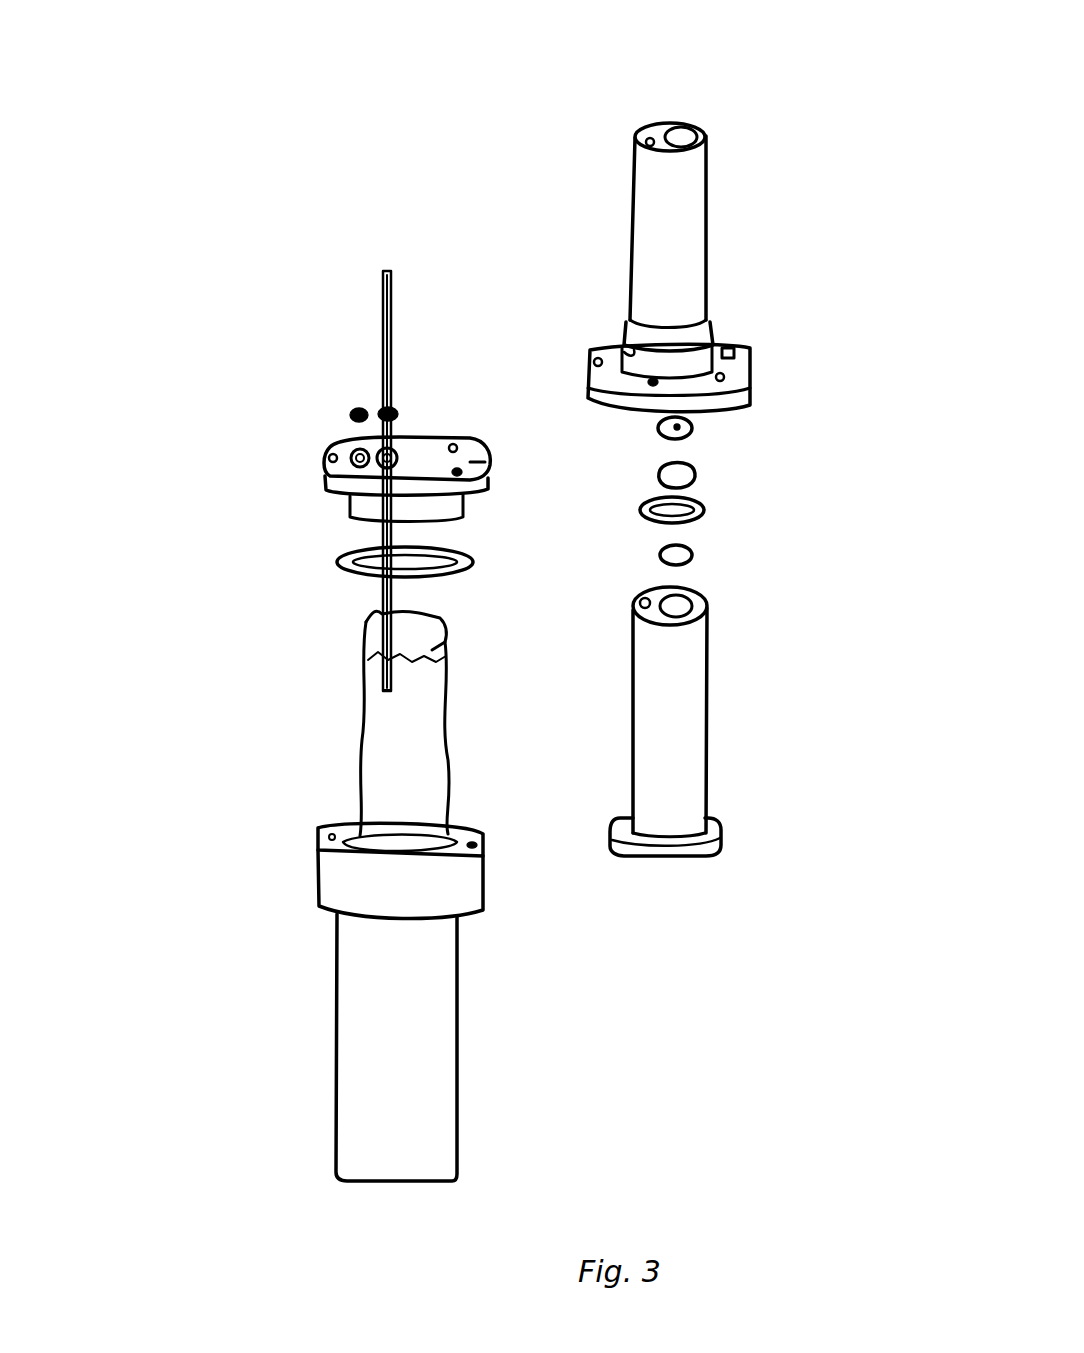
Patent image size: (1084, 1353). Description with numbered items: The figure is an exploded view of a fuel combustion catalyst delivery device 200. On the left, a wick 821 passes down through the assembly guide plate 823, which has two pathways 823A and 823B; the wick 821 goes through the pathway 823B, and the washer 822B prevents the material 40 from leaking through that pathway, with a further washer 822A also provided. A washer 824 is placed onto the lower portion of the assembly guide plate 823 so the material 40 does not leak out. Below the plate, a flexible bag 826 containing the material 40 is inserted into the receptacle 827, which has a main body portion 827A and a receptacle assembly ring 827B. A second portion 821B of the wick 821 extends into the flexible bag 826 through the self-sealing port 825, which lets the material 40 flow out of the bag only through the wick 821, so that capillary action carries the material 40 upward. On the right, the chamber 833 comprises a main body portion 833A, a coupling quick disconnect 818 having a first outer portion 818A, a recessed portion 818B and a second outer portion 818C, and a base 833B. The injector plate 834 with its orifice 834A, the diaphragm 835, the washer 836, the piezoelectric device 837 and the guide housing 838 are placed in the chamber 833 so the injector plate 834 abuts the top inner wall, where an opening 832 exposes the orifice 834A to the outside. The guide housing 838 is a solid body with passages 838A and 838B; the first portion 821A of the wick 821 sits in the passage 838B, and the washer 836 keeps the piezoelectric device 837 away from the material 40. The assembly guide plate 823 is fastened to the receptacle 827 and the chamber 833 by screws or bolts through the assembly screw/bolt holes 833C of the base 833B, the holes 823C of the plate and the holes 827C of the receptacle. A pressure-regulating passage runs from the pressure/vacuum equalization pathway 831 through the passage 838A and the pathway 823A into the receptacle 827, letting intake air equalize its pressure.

The fuel combustion catalyst delivery device 200 is at (720, 1062).
The material 40 is at (393, 737).
The coupling quick disconnect 818 is at (627, 318).
The first outer portion 818A is at (748, 297).
The recessed portion 818B is at (762, 327).
The second outer portion 818C is at (632, 356).
The wick 821 is at (383, 310).
The first portion of the wick 821A is at (408, 320).
The second portion of the wick 821B is at (348, 533).
The washer 822A is at (334, 400).
The washer 822B is at (376, 392).
The assembly guide plate 823 is at (330, 465).
The pathway 823A is at (346, 445).
The pathway 823B is at (400, 442).
The assembly screw/bolt holes 823C is at (476, 464).
The washer 824 is at (337, 556).
The self-sealing port 825 is at (372, 615).
The flexible bag 826 is at (362, 675).
The receptacle 827 is at (337, 1065).
The main body portion 827A is at (436, 1040).
The receptacle assembly ring 827B is at (318, 870).
The assembly screw/bolt holes 827C is at (483, 860).
The pressure/vacuum equalization pathway 831 is at (648, 140).
The opening 832 is at (705, 130).
The chamber 833 is at (707, 230).
The main body portion 833A is at (702, 190).
The base 833B is at (760, 367).
The assembly screw/bolt holes 833C is at (748, 360).
The injector plate 834 is at (700, 420).
The orifice 834A is at (658, 428).
The diaphragm 835 is at (700, 473).
The washer 836 is at (706, 512).
The piezoelectric device 837 is at (700, 565).
The guide housing 838 is at (710, 740).
The passage 838A is at (640, 610).
The passage 838B is at (646, 614).